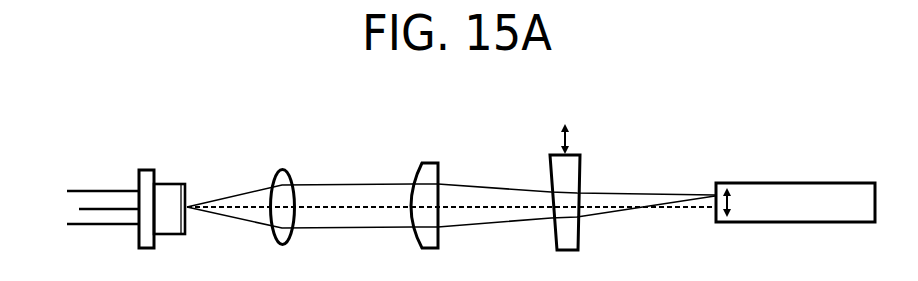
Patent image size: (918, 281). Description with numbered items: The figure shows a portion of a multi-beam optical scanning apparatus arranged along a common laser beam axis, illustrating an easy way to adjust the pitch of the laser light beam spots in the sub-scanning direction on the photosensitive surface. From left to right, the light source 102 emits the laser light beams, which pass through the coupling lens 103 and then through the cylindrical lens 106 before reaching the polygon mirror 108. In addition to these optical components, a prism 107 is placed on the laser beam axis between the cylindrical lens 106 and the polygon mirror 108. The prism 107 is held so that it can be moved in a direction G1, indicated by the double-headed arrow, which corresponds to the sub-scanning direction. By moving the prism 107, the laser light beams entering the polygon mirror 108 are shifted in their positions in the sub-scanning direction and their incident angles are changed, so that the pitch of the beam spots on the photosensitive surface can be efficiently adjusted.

The light source 102 is at (169, 190).
The coupling lens 103 is at (282, 178).
The cylindrical lens 106 is at (430, 170).
The prism 107 is at (573, 172).
The polygon mirror 108 is at (812, 190).
The direction of movement of the prism G1 is at (563, 128).